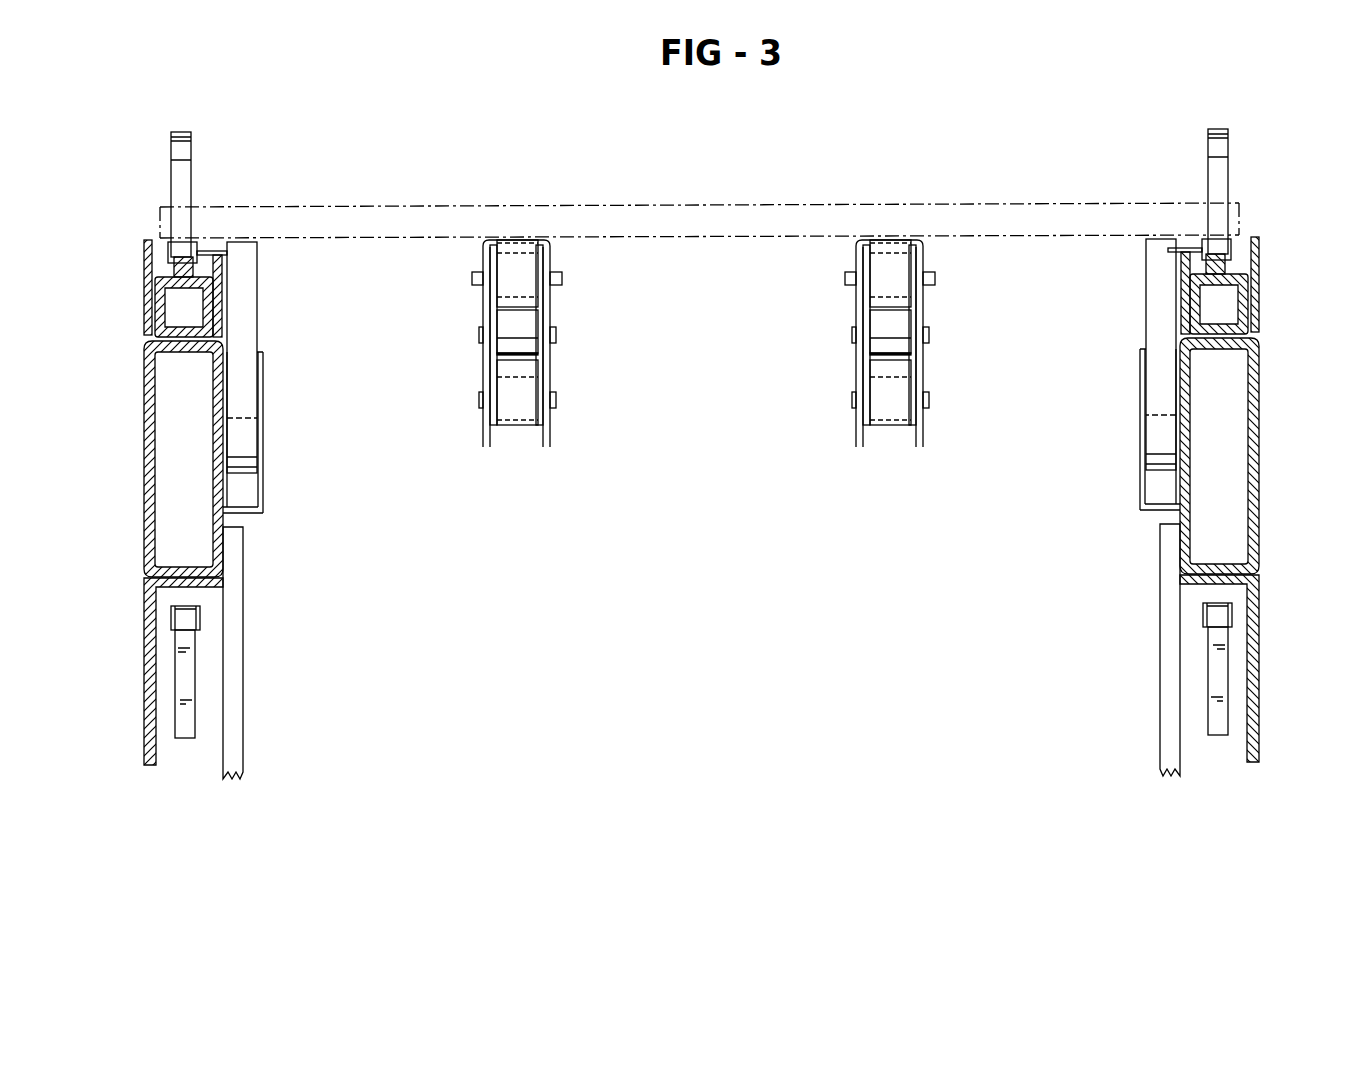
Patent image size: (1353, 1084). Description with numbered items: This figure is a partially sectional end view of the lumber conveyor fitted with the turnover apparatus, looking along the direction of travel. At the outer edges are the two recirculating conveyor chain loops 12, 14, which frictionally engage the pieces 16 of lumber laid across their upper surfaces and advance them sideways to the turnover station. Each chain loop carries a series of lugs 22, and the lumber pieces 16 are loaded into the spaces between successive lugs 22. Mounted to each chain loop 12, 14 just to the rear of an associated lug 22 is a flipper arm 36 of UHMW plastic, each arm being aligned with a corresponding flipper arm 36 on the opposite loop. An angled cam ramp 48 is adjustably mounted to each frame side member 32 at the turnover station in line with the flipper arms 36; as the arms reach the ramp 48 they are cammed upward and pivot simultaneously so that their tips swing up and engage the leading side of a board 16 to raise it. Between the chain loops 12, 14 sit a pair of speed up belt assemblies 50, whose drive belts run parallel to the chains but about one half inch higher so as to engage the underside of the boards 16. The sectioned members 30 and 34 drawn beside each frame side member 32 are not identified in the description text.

The conveyor chain loop 12 is at (166, 252).
The conveyor chain loop 14 is at (1237, 247).
The pieces of lumber 16 is at (716, 205).
The lug 22 is at (201, 164).
The track assembly 30 is at (131, 545).
The frame side member 32 is at (150, 484).
The mounting bracket 34 is at (149, 288).
The flipper arm 36 is at (268, 321).
The angled cam ramp 48 is at (265, 492).
The speed up belt assembly 50 is at (583, 410).